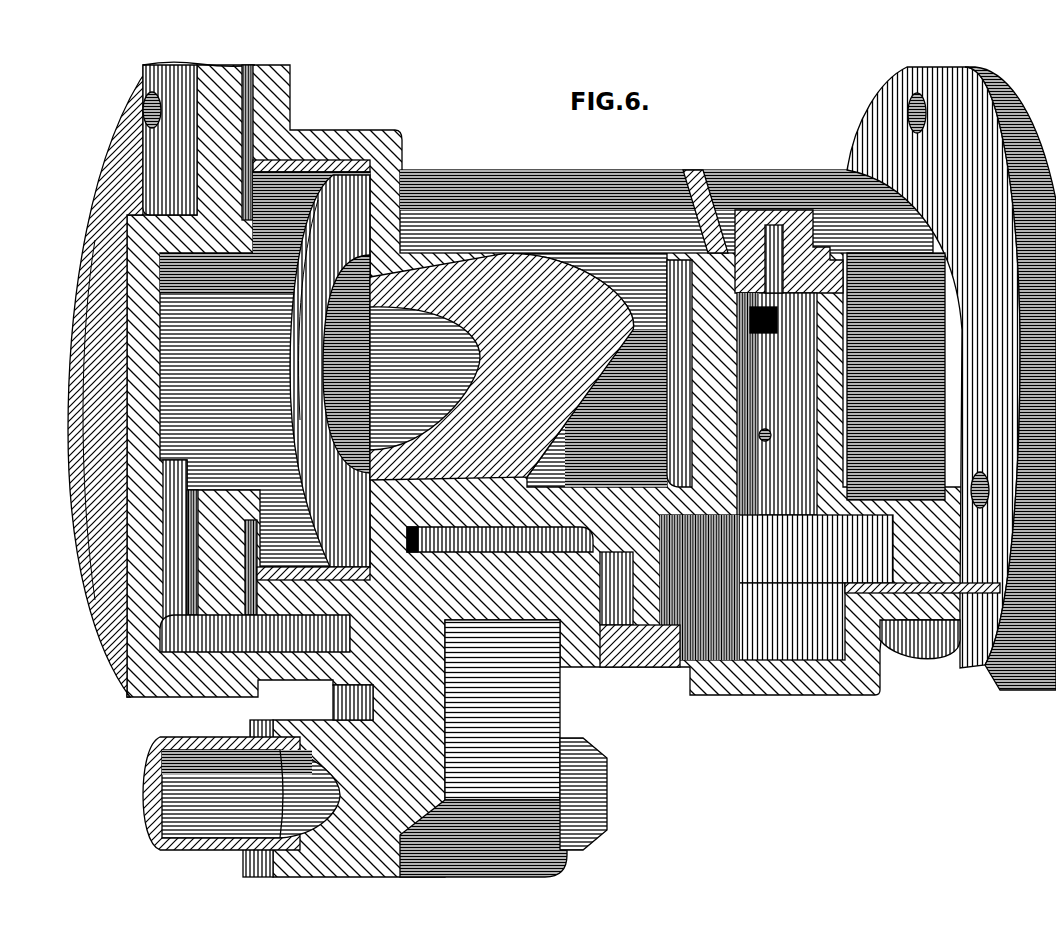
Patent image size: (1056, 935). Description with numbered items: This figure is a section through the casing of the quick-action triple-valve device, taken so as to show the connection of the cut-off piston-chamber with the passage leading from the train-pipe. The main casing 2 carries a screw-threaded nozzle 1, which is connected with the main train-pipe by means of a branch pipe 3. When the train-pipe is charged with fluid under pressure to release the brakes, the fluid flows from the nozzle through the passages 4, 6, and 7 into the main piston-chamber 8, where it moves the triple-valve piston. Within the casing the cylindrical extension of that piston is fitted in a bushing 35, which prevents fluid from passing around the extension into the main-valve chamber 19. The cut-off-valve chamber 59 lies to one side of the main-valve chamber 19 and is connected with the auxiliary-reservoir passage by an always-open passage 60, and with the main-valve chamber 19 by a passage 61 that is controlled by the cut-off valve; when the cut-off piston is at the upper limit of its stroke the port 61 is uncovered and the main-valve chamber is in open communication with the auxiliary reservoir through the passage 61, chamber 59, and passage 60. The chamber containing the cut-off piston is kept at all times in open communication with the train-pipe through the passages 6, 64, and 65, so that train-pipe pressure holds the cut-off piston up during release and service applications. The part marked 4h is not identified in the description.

The screw-threaded nozzle 1 is at (300, 722).
The main casing 2 is at (486, 172).
The branch pipe 3 is at (198, 737).
The passage 4 is at (251, 794).
The passage 6 is at (255, 633).
The passage 7 is at (266, 541).
The main piston-chamber 8 is at (265, 369).
The main-valve chamber 19 is at (335, 371).
The bushing 35 is at (502, 366).
The chamber 59 is at (777, 370).
The passage 60 is at (777, 321).
The passage 61 is at (772, 436).
The passage 64 is at (406, 536).
The passage 65 is at (543, 597).
The bushing 4h is at (776, 587).